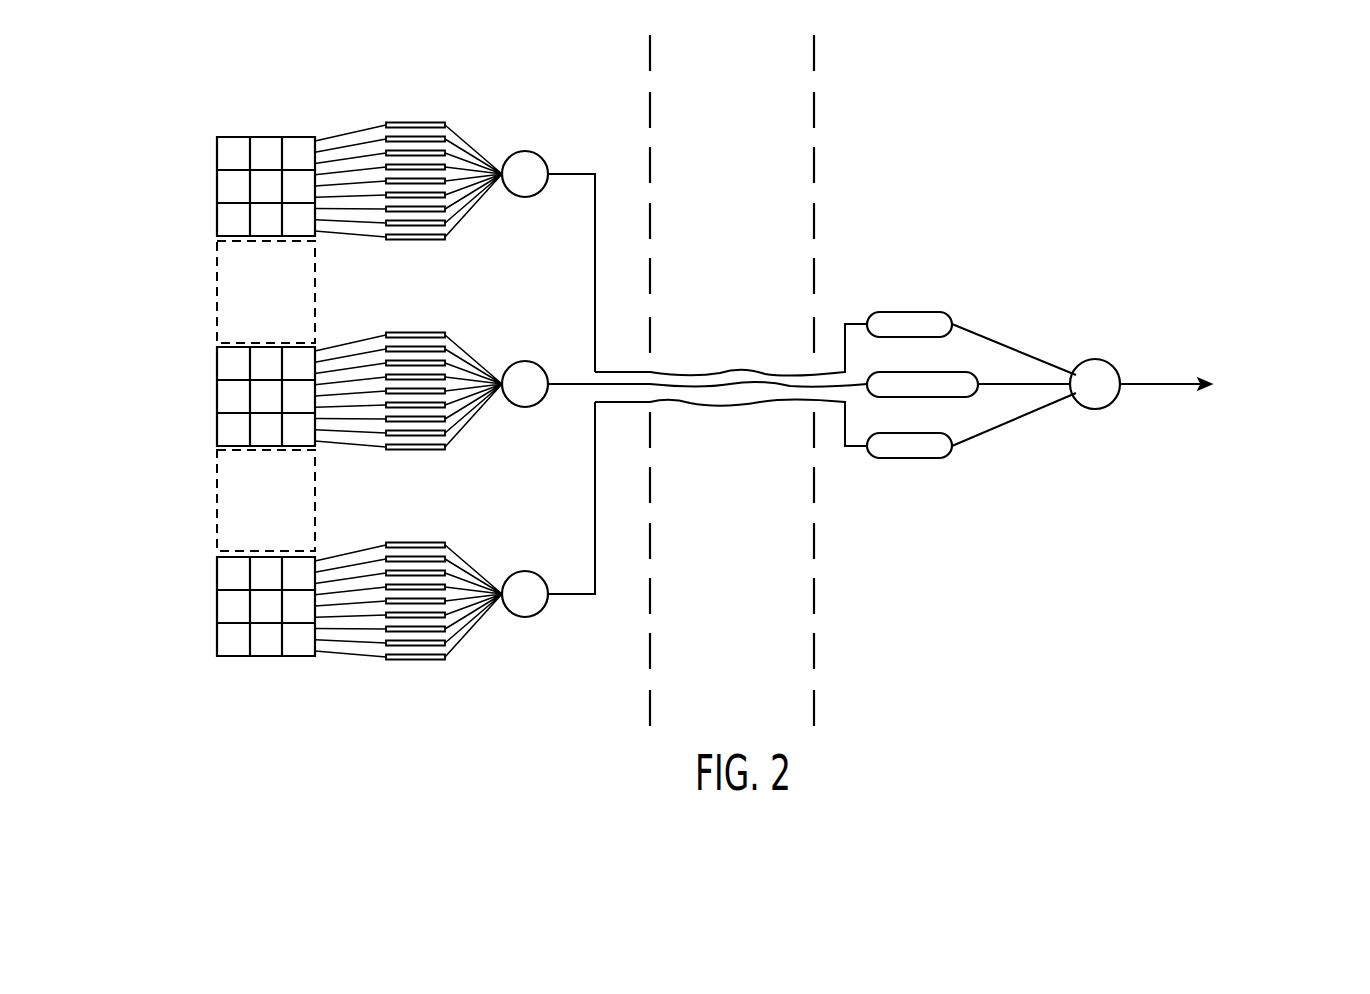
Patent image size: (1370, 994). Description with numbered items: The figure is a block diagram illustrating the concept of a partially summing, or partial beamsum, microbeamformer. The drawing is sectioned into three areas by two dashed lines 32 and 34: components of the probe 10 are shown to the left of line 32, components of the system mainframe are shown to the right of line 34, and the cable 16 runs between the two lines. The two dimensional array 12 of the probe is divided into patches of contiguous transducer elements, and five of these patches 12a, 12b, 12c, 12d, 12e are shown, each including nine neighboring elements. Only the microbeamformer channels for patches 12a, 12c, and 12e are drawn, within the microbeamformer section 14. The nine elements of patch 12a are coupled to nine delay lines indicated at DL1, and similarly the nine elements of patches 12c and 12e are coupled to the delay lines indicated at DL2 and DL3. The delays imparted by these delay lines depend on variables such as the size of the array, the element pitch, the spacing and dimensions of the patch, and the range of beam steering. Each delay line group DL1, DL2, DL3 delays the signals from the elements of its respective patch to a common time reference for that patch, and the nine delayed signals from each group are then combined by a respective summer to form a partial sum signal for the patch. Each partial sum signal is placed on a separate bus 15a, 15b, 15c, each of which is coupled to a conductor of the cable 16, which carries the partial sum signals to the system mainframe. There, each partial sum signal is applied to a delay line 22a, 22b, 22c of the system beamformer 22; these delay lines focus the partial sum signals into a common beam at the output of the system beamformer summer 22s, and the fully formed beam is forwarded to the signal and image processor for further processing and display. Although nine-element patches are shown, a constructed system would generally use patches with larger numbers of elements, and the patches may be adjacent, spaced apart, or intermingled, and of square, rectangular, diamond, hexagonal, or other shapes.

The probe 10 is at (232, 700).
The two dimensional array 12 is at (271, 71).
The patch 12a is at (217, 152).
The patch 12b is at (217, 297).
The patch 12c is at (217, 400).
The patch 12d is at (217, 492).
The patch 12e is at (217, 574).
The delay line and summing section 14 is at (489, 71).
The delay lines DL1 is at (410, 113).
The delay lines DL2 is at (414, 327).
The delay lines DL3 is at (416, 532).
The bus 15a is at (595, 258).
The bus 15b is at (572, 382).
The bus 15c is at (595, 500).
The cable 16 is at (743, 364).
The dashed line 32 is at (650, 58).
The dashed line 34 is at (814, 58).
The system beamformer 22 is at (1030, 275).
The delay line 22a is at (888, 312).
The delay line 22b is at (904, 372).
The delay line 22c is at (908, 460).
The system beamformer summer 22s is at (1100, 358).